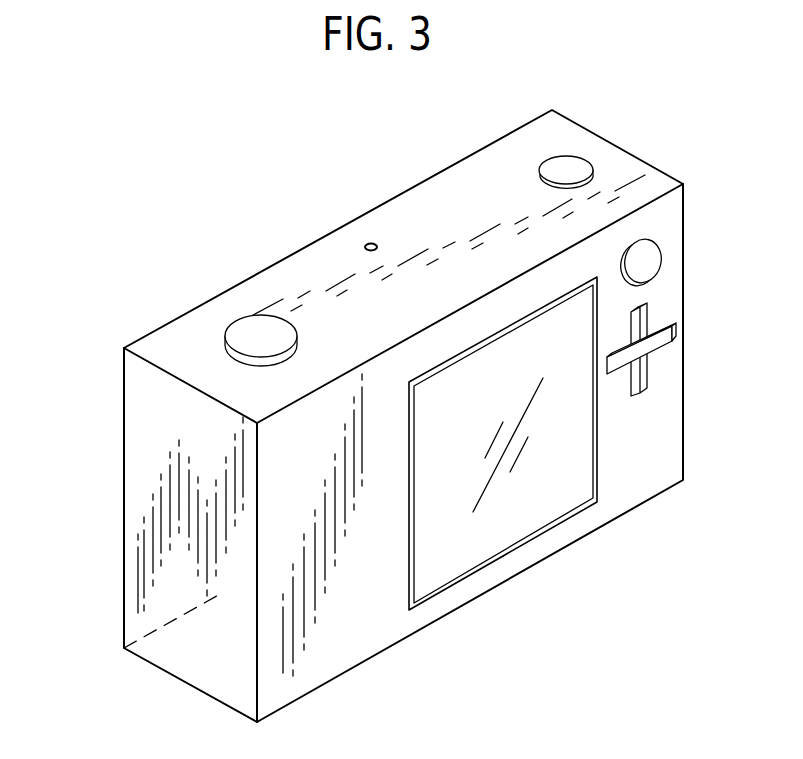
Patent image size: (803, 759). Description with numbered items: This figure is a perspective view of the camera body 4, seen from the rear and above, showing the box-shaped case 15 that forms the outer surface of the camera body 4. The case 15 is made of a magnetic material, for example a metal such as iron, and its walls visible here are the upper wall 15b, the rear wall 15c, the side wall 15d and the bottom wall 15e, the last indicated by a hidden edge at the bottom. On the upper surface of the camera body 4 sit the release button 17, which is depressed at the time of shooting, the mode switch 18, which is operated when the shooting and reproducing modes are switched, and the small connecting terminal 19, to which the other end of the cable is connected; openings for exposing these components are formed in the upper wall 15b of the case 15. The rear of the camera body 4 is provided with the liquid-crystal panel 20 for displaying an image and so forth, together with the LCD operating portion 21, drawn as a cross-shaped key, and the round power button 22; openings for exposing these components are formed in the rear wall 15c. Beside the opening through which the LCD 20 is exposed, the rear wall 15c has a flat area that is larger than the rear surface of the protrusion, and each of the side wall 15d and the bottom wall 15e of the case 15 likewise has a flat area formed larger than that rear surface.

The camera body 4 is at (390, 408).
The case 15 is at (356, 428).
The upper wall 15b is at (300, 270).
The rear wall 15c is at (383, 632).
The side wall 15d is at (139, 453).
The bottom wall 15e is at (207, 668).
The release button 17 is at (560, 163).
The mode switch 18 is at (252, 333).
The connecting terminal 19 is at (366, 244).
The liquid-crystal panel 20 is at (520, 513).
The LCD operating portion 21 is at (660, 343).
The power button 22 is at (652, 260).